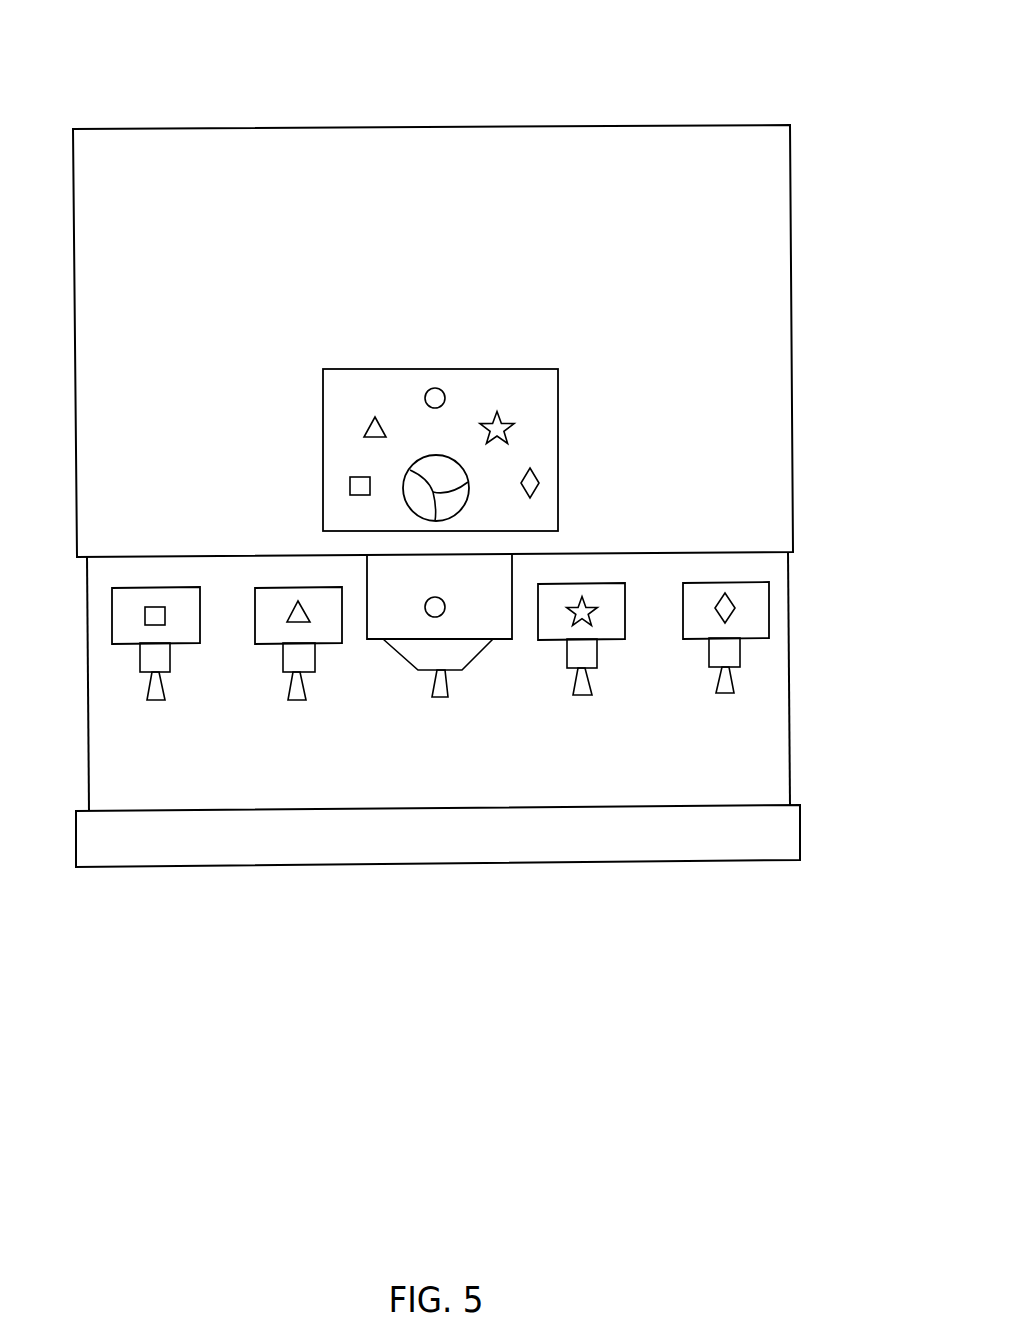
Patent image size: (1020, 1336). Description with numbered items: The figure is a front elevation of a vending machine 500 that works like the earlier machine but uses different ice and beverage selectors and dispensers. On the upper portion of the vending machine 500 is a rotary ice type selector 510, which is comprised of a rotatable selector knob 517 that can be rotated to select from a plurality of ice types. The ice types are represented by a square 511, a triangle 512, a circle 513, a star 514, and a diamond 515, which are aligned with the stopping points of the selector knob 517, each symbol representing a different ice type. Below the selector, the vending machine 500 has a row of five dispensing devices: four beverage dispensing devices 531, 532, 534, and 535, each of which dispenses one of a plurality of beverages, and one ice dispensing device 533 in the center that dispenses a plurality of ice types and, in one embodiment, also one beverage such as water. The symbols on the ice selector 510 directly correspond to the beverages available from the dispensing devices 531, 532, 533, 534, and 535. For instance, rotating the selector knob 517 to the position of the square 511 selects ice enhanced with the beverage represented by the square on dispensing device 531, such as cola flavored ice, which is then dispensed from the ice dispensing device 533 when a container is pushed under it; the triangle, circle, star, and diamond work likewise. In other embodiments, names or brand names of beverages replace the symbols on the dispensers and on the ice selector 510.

The vending machine 500 is at (618, 55).
The rotary ice type selector 510 is at (323, 412).
The square symbol 511 is at (350, 481).
The triangle symbol 512 is at (375, 419).
The circle symbol 513 is at (443, 398).
The star symbol 514 is at (517, 422).
The diamond symbol 515 is at (540, 476).
The rotatable selector knob 517 is at (463, 505).
The dispensing device 531 is at (195, 645).
The dispensing device 532 is at (335, 645).
The ice dispensing device 533 is at (493, 641).
The dispensing device 534 is at (617, 641).
The dispensing device 535 is at (755, 640).